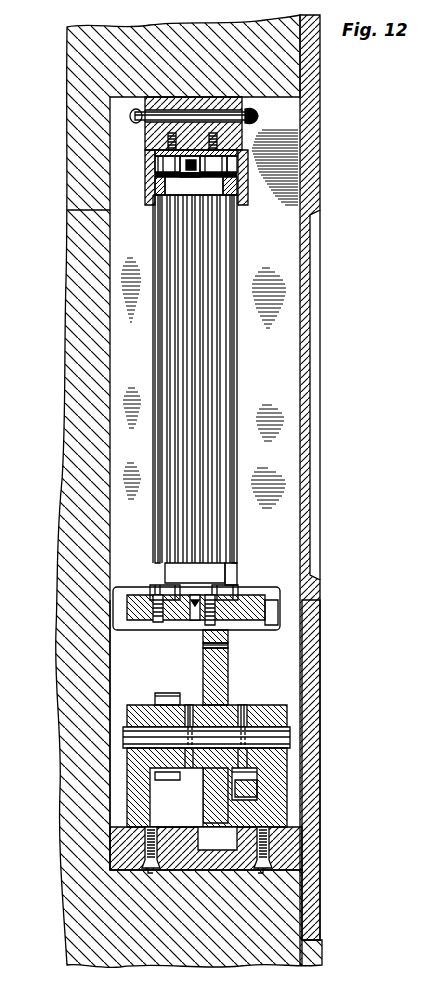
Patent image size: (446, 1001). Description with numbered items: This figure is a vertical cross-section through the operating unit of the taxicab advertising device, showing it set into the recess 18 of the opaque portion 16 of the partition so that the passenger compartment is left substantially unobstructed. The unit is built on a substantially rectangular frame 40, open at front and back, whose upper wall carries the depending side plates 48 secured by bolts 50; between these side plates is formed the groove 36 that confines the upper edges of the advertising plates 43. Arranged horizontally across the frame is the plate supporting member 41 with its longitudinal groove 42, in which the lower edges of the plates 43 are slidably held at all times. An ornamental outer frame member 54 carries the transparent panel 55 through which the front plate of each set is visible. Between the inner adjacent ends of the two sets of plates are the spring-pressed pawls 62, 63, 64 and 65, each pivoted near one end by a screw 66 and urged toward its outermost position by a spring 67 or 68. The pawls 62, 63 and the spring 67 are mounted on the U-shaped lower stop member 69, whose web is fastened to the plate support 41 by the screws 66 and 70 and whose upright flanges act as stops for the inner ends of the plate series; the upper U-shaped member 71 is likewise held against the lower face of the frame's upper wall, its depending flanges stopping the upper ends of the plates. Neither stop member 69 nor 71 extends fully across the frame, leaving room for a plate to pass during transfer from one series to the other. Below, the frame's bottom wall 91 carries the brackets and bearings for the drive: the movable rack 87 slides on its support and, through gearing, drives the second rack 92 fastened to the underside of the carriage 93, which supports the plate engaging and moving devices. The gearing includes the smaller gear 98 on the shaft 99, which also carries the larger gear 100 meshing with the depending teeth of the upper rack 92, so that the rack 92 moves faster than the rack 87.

The opaque portion of the partition 16 is at (72, 266).
The recess 18 is at (112, 670).
The groove 36 is at (231, 203).
The frame 40 is at (243, 98).
The plate supporting member 41 is at (261, 596).
The longitudinal groove 42 is at (247, 625).
The plates 43 is at (212, 393).
The depending side plates 48 is at (172, 193).
The bolts 50 is at (259, 117).
The outer frame member 54 is at (322, 680).
The transparent panel 55 is at (310, 455).
The spring-pressed pawl 62 is at (224, 597).
The spring-pressed pawl 63 is at (153, 625).
The spring-pressed pawl 64 is at (228, 161).
The spring-pressed pawl 65 is at (153, 164).
The screw 66 is at (192, 619).
The spring 67 is at (153, 585).
The spring 68 is at (153, 168).
The lower stop member 69 is at (216, 568).
The screw 70 is at (196, 370).
The upper U-shaped member 71 is at (161, 206).
The movable rack 87 is at (255, 787).
The bottom wall 91 is at (177, 830).
The second rack 92 is at (227, 644).
The carriage 93 is at (273, 617).
The smaller gear 98 is at (170, 696).
The shaft 99 is at (283, 738).
The larger gear 100 is at (228, 676).